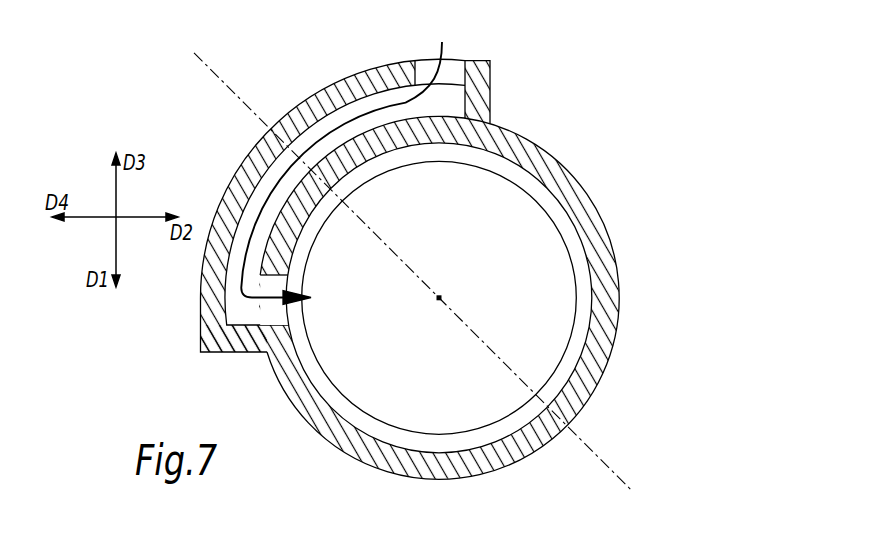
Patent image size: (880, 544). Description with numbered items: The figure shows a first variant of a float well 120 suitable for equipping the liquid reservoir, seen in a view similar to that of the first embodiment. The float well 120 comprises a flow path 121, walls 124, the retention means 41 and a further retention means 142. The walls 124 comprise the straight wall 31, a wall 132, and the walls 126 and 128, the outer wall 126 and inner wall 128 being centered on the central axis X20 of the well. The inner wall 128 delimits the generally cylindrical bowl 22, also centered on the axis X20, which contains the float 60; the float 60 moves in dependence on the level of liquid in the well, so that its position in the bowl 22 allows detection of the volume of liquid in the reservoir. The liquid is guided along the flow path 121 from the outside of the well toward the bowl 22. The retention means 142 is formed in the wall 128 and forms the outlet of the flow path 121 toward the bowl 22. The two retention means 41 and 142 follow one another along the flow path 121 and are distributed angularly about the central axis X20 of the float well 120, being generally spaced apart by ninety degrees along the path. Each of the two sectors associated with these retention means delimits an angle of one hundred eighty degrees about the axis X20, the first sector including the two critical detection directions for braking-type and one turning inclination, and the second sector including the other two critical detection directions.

The float well 120 is at (407, 246).
The walls 124 is at (423, 246).
The wall 126 is at (313, 107).
The wall 128 is at (597, 350).
The bowl 22 is at (572, 184).
The float 60 is at (490, 205).
The straight part 31 is at (490, 85).
The retention means 41 is at (452, 70).
The flow path 121 is at (315, 299).
The retention means 142 is at (272, 307).
The wall 132 is at (233, 340).
The central axis X20 is at (413, 272).